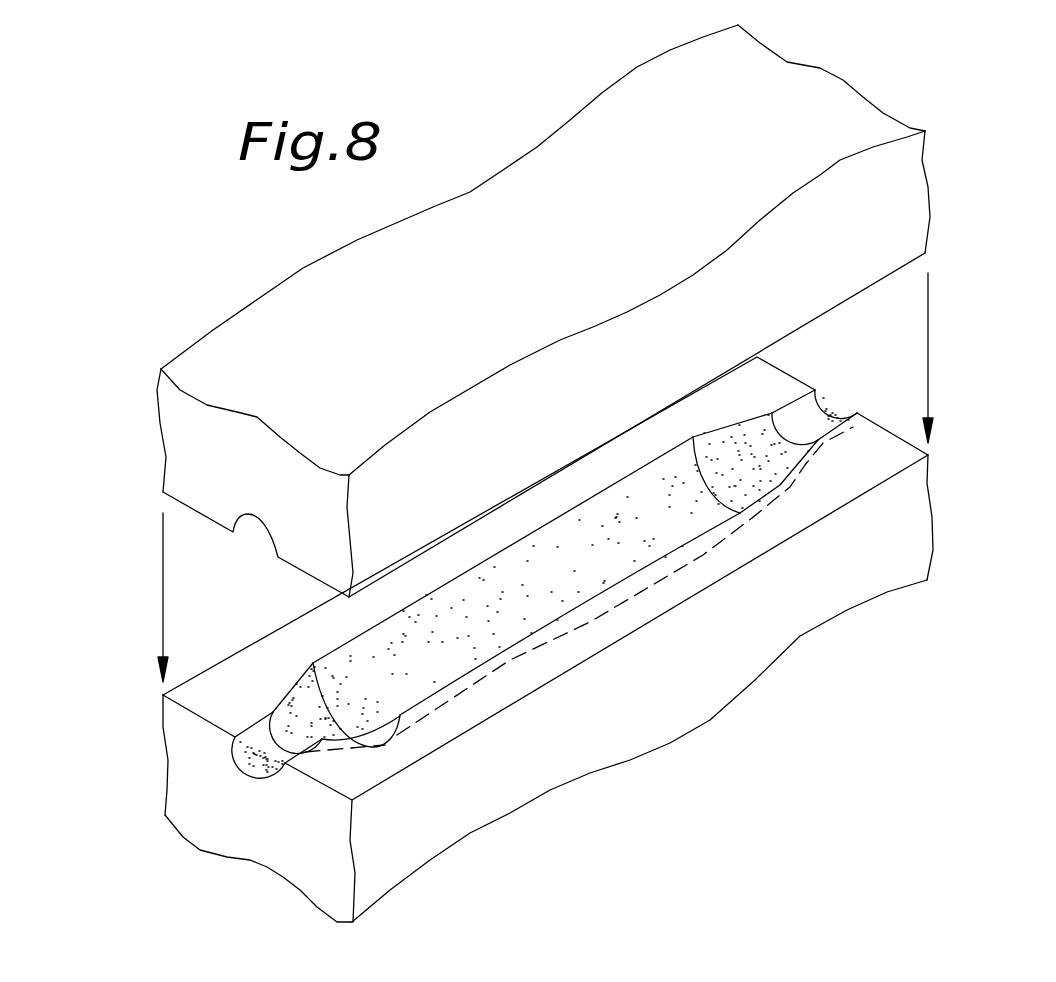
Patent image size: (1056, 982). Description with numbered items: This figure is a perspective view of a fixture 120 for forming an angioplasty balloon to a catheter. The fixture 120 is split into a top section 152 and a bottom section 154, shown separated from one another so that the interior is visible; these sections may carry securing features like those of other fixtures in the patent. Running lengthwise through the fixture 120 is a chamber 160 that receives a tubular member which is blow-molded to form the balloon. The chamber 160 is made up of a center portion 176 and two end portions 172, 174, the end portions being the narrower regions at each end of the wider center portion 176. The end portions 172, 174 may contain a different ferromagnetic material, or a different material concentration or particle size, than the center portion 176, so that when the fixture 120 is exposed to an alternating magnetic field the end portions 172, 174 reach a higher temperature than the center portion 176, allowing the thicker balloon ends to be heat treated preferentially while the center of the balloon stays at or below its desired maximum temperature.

The fixture 120 is at (140, 582).
The top section 152 is at (187, 437).
The bottom section 154 is at (838, 593).
The chamber 160 is at (542, 605).
The end portion 172 is at (263, 747).
The end portion 174 is at (820, 408).
The center portion 176 is at (758, 467).